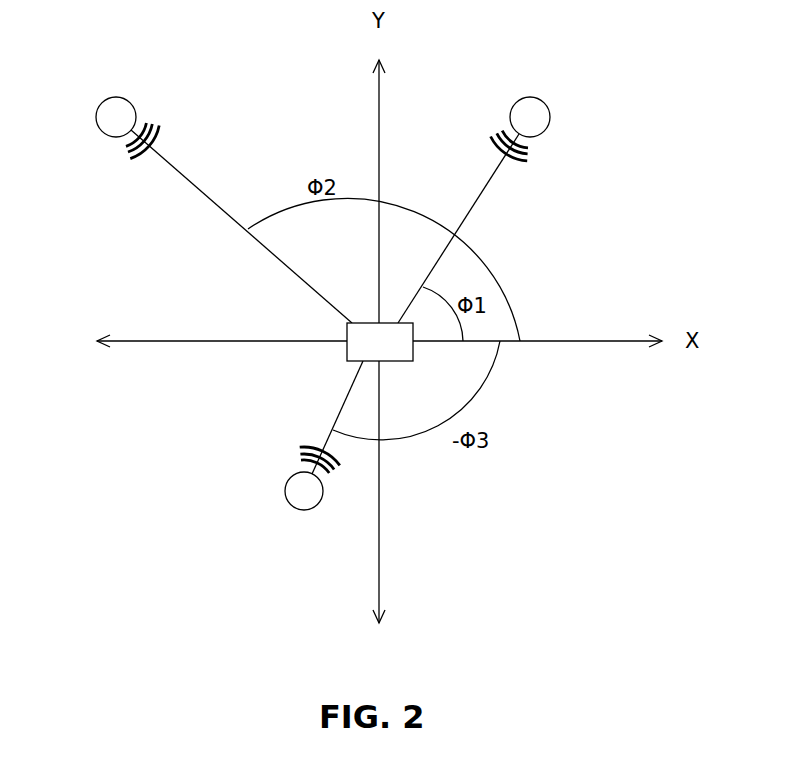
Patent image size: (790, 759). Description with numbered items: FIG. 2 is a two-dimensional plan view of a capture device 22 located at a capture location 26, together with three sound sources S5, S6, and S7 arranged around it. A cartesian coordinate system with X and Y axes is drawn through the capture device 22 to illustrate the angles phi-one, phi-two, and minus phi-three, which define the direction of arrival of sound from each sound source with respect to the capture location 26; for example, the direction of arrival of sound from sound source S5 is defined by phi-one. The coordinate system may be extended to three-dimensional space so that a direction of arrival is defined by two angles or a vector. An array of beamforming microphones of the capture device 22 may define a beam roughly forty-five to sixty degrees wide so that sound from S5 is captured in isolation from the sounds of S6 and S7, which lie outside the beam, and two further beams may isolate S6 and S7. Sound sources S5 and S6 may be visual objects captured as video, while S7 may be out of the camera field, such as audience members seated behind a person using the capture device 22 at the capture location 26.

The capture device 22 is at (395, 350).
The capture location 26 is at (345, 352).
The sound source S5 is at (550, 112).
The sound source S6 is at (97, 112).
The sound source S7 is at (285, 497).